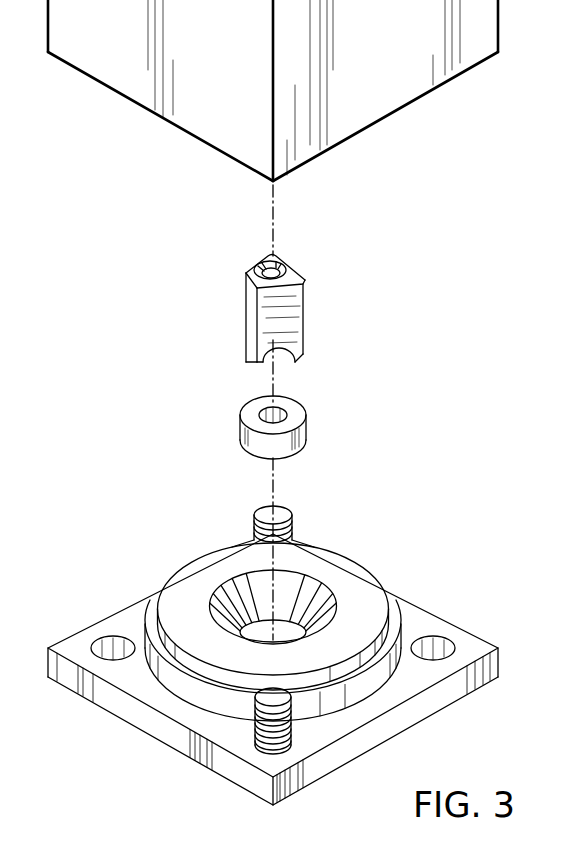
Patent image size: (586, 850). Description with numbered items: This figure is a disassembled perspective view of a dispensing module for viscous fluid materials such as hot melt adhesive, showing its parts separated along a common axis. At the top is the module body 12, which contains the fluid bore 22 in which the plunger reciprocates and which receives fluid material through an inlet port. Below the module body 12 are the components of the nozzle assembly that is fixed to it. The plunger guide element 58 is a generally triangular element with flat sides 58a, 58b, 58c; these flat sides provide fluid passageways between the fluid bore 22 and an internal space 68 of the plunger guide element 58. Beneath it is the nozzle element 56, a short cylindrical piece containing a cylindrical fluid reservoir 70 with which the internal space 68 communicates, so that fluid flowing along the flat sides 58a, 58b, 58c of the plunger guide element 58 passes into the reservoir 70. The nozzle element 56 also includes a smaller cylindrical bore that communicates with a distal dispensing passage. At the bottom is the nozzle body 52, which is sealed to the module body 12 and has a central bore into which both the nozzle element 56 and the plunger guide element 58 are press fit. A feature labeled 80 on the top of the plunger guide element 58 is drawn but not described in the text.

The module body 12 is at (377, 100).
The fluid bore 22 is at (242, 592).
The nozzle body 52 is at (273, 655).
The nozzle element 56 is at (244, 414).
The plunger guide element 58 is at (273, 311).
The flat side 58a is at (245, 273).
The flat side 58b is at (291, 266).
The flat side 58c is at (287, 317).
The internal space 68 is at (285, 360).
The cylindrical fluid reservoir 70 is at (262, 410).
The insert hole 80 is at (268, 268).